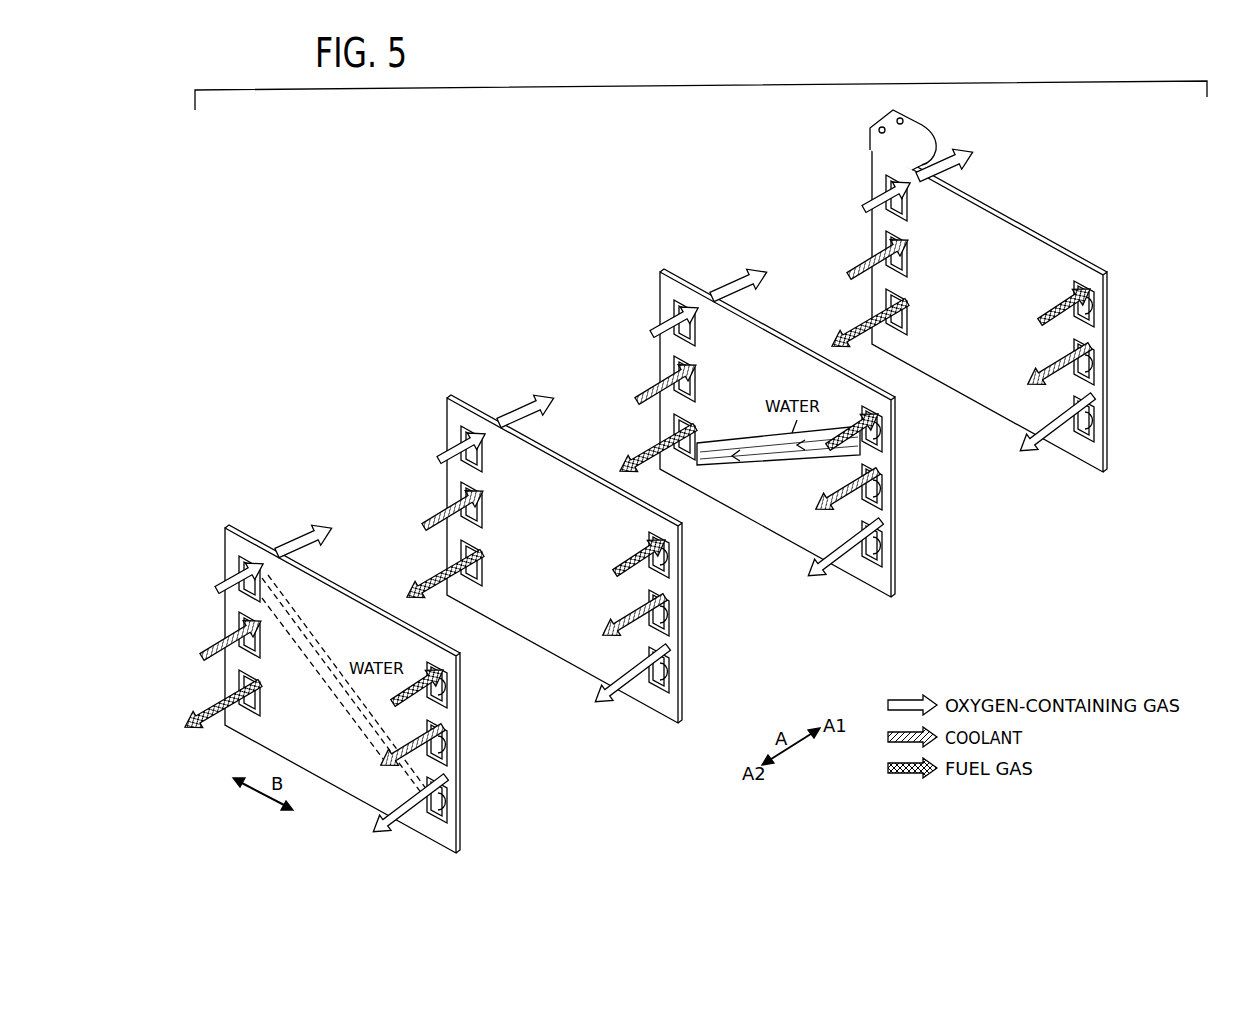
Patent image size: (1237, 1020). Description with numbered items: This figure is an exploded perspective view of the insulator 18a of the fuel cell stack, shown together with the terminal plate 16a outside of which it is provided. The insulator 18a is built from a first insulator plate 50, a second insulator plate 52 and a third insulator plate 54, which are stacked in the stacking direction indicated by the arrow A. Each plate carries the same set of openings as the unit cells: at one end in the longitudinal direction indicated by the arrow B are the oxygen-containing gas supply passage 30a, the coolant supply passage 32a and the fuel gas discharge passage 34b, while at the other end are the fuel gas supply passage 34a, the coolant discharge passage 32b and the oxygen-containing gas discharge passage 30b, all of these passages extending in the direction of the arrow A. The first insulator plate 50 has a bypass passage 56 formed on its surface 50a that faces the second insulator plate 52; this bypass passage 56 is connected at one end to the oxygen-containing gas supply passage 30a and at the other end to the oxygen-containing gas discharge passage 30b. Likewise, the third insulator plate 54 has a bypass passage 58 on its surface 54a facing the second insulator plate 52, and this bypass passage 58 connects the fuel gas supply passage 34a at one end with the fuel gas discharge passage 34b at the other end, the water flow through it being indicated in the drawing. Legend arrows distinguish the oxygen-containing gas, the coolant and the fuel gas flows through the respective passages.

The positive electrode terminal 16a is at (1034, 234).
The insulator 18a is at (386, 293).
The oxygen-containing gas supply passage 30a is at (246, 570).
The oxygen-containing gas discharge passage 30b is at (447, 812).
The coolant supply passage 32a is at (246, 626).
The coolant discharge passage 32b is at (447, 757).
The fuel gas supply passage 34a is at (447, 700).
The fuel gas discharge passage 34b is at (246, 682).
The first insulator plate 50 is at (229, 527).
The surface of first insulator plate 50a is at (330, 768).
The second insulator plate 52 is at (447, 399).
The third insulator plate 54 is at (660, 271).
The surface of third insulator plate 54a is at (771, 514).
The bypass passage 56 is at (332, 690).
The bypass passage 58 is at (777, 457).